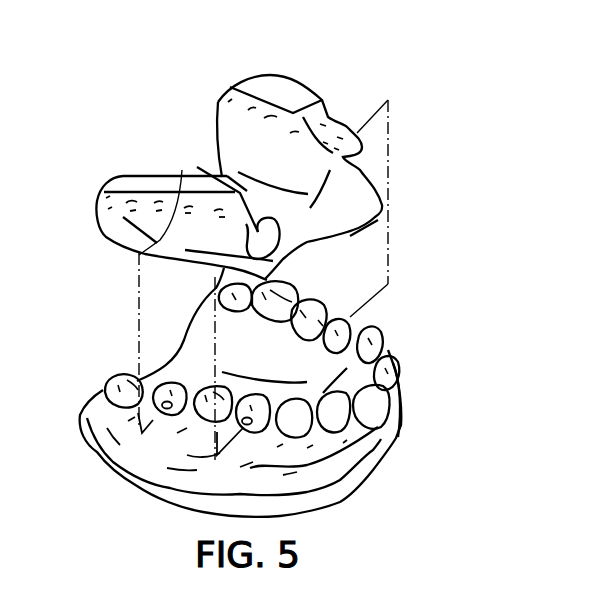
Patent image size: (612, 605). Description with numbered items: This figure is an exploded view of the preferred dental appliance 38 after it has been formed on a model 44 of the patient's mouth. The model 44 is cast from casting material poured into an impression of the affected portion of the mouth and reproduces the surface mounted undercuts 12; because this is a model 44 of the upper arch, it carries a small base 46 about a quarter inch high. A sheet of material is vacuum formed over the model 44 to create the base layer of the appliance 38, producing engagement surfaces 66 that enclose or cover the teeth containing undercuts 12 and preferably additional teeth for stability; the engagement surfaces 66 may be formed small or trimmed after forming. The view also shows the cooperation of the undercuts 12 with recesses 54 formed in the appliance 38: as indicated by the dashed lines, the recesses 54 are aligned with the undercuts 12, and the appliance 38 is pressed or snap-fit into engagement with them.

The engagement surfaces 66 is at (262, 81).
The appliance 38 is at (105, 204).
The recesses 54 is at (182, 174).
The model 44 is at (407, 403).
The base 46 is at (383, 455).
The undercuts 12 is at (243, 425).